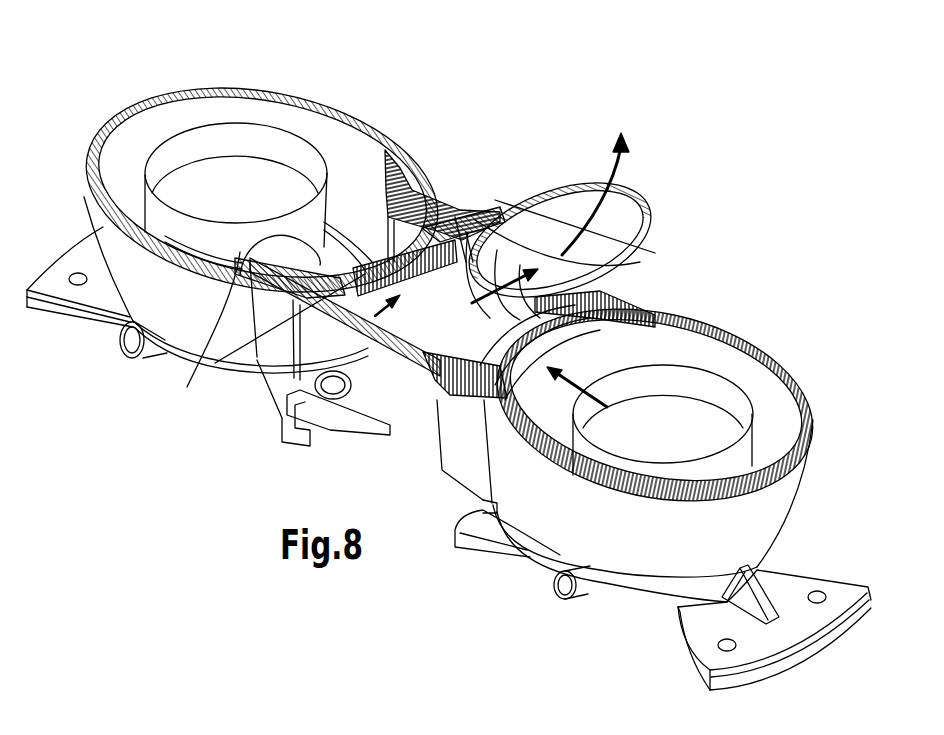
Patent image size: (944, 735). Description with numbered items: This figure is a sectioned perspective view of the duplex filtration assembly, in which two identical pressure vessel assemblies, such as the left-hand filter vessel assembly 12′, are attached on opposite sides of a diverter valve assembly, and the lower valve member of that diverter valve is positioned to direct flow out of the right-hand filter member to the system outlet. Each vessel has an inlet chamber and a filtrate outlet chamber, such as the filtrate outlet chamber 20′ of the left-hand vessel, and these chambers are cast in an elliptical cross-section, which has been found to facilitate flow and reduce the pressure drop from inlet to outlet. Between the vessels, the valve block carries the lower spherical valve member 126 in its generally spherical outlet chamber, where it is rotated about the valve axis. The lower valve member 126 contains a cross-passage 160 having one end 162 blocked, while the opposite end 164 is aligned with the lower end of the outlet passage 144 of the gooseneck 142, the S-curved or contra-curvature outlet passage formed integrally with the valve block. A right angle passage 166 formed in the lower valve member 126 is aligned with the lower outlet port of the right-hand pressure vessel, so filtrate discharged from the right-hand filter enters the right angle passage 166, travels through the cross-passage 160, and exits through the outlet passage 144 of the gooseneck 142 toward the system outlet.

The left-hand filter vessel assembly 12′ is at (91, 212).
The filtrate outlet chamber of left-hand pressure vessel 20′ is at (303, 120).
The lower spherical valve member 126 is at (390, 256).
The cross-passage 160 is at (257, 370).
The blocked end of cross-passage 162 is at (303, 375).
The right angle passage 166 is at (425, 375).
The gooseneck outlet passage 142 is at (621, 265).
The opposite end of cross-passage 164 is at (542, 312).
The outlet passage of gooseneck 144 is at (614, 318).